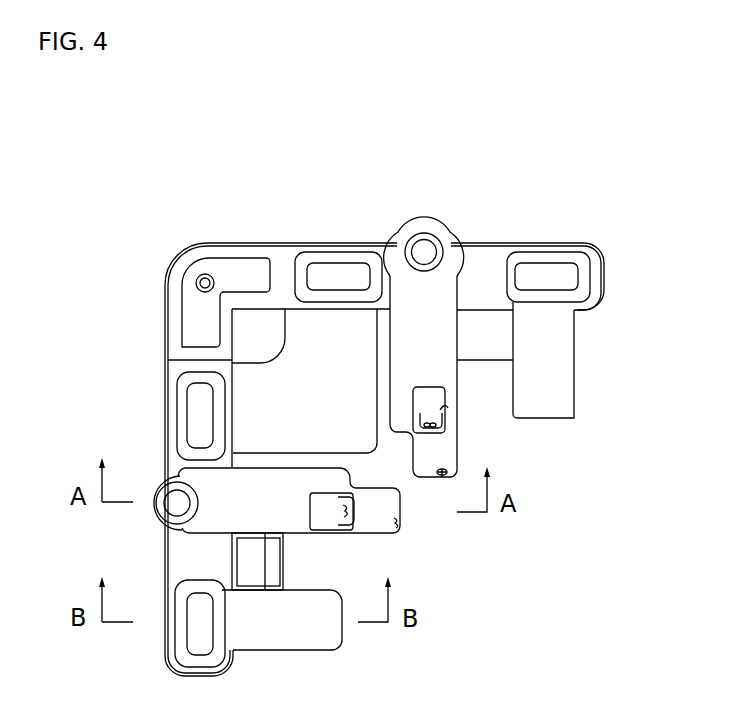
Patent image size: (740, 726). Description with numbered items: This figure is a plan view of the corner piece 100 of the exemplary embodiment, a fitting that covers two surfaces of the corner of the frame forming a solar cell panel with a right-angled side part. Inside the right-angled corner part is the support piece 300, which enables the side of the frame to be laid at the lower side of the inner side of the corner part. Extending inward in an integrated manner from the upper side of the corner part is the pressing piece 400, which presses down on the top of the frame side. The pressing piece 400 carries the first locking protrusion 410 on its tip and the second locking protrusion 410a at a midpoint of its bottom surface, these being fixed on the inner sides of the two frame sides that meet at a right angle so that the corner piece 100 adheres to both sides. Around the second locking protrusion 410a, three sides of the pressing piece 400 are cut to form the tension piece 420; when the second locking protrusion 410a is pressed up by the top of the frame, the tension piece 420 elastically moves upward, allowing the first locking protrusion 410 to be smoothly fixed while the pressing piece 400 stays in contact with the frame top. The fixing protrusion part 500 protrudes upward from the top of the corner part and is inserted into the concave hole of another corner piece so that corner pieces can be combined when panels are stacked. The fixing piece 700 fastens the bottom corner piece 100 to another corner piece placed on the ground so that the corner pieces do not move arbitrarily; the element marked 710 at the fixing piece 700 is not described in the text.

The corner piece 100 is at (298, 178).
The support piece 300 is at (335, 403).
The pressing piece 400 is at (448, 370).
The first locking protrusion 410 is at (443, 479).
The second locking protrusion 410a is at (448, 420).
The tension piece 420 is at (445, 423).
The fixing protrusion part 500 is at (197, 410).
The fixing piece 700 is at (445, 237).
The hinge shaft hole 710 is at (423, 252).